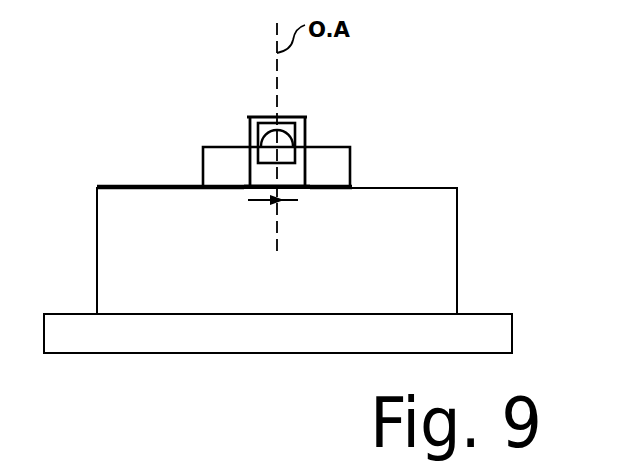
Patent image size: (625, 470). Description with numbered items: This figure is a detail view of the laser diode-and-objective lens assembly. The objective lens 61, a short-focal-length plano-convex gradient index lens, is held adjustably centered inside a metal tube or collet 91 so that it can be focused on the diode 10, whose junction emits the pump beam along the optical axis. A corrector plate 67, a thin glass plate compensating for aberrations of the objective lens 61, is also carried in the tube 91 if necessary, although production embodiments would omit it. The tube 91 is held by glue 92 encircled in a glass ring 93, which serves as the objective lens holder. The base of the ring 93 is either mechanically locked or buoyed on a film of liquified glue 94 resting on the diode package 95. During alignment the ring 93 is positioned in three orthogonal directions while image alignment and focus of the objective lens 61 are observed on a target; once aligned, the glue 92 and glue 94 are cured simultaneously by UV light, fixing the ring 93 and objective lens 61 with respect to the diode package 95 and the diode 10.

The diode 10 is at (257, 212).
The objective lens 61 is at (268, 131).
The corrector plate 67 is at (255, 158).
The tube 91 is at (303, 117).
The glue 92 is at (310, 145).
The glass ring 93 is at (337, 162).
The liquified glue 94 is at (353, 188).
The diode package 95 is at (370, 297).